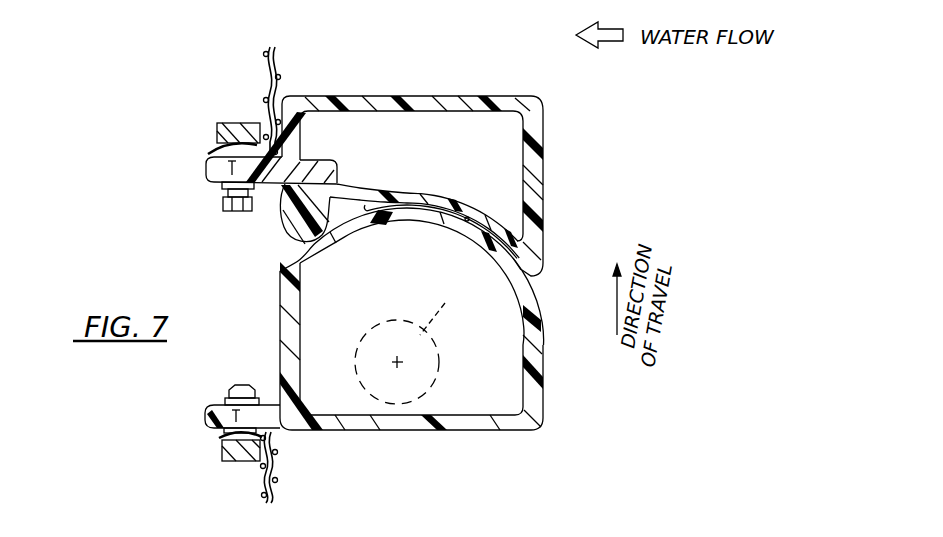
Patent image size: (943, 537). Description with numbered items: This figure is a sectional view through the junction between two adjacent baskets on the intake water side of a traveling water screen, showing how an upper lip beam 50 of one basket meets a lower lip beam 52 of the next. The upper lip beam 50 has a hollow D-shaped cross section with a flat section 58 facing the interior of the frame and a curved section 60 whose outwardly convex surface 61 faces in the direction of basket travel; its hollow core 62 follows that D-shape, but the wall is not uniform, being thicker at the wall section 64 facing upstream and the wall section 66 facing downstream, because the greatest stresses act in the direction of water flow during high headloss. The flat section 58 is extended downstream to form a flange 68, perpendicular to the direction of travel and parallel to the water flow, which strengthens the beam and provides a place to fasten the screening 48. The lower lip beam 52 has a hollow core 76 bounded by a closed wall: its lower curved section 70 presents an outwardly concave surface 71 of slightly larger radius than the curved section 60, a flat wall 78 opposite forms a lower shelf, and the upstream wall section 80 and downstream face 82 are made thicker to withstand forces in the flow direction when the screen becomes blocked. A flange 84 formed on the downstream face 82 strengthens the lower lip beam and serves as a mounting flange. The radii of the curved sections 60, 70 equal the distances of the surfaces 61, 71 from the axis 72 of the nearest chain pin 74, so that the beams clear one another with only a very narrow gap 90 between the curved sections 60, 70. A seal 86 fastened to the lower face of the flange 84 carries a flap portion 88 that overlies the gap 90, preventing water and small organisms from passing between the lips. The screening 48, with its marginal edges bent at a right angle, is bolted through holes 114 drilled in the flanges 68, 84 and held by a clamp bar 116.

The screening 48 is at (273, 57).
The upper lip beam 50 is at (437, 352).
The lower lip beam 52 is at (401, 245).
The flat section 58 is at (424, 430).
The curved section 60 is at (417, 223).
The outwardly convex surface 61 is at (495, 236).
The hollow core 62 is at (503, 402).
The wall section facing upstream 64 is at (547, 398).
The wall section facing downstream 66 is at (281, 345).
The flange 68 is at (215, 405).
The curved section 70 is at (425, 199).
The outwardly concave surface 71 is at (468, 217).
The axis 72 is at (400, 361).
The chain pin 74 is at (439, 308).
The hollow core 76 is at (450, 118).
The flat wall 78 is at (418, 97).
The upstream wall section 80 is at (545, 172).
The downstream face 82 is at (297, 147).
The flange 84 is at (210, 182).
The seal 86 is at (289, 226).
The flap portion 88 is at (300, 241).
The gap 90 is at (367, 218).
The holes 114 is at (230, 168).
The clamp bar 116 is at (228, 453).